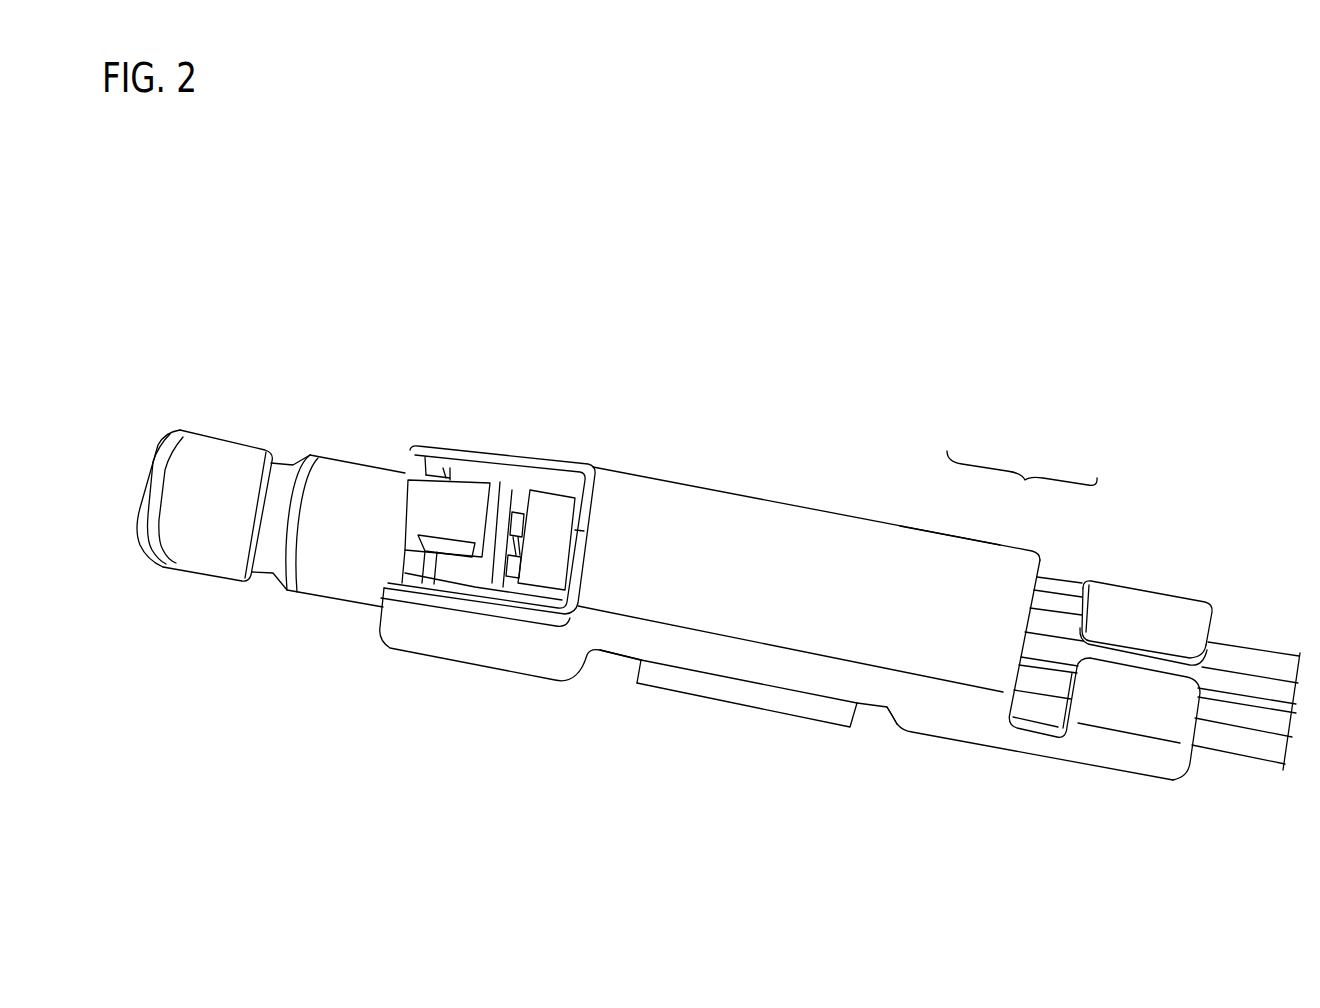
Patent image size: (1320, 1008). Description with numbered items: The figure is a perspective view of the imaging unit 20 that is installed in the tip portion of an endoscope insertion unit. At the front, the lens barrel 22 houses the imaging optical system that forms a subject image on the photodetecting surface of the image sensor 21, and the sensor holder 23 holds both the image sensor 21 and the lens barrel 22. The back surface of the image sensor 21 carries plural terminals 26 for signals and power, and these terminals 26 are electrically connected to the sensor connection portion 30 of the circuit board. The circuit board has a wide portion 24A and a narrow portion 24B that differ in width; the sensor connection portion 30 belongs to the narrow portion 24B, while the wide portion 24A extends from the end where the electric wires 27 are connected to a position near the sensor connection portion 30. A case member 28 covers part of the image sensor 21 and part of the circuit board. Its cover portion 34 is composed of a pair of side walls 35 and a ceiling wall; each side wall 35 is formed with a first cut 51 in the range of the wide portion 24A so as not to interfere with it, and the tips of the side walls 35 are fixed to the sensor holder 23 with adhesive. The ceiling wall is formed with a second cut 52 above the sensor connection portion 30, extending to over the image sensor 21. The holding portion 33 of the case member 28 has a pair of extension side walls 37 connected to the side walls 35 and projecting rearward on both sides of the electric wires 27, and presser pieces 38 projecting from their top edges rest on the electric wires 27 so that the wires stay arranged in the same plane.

The imaging unit 20 is at (473, 314).
The image sensor 21 is at (465, 477).
The lens barrel 22 is at (234, 437).
The sensor holder 23 is at (346, 465).
The wide portion 24A is at (770, 697).
The narrow portion 24B is at (615, 660).
The terminals 26 is at (523, 512).
The electric wires 27 is at (1245, 683).
The case member 28 is at (1022, 454).
The sensor connection portion 30 is at (557, 500).
The holding portion 33 is at (1104, 573).
The cover portion 34 is at (932, 526).
The side walls 35 is at (684, 476).
The extension side walls 37 is at (1137, 584).
The presser pieces 38 is at (1173, 607).
The first cut 51 is at (870, 718).
The second cut 52 is at (555, 470).